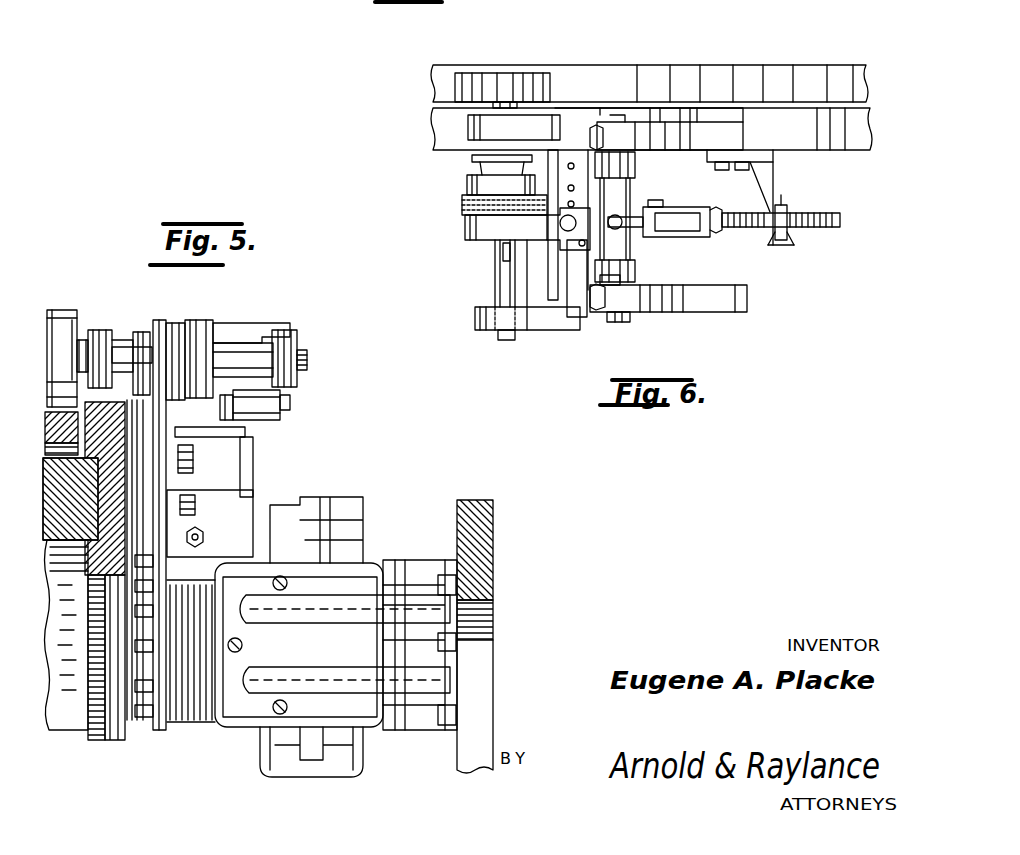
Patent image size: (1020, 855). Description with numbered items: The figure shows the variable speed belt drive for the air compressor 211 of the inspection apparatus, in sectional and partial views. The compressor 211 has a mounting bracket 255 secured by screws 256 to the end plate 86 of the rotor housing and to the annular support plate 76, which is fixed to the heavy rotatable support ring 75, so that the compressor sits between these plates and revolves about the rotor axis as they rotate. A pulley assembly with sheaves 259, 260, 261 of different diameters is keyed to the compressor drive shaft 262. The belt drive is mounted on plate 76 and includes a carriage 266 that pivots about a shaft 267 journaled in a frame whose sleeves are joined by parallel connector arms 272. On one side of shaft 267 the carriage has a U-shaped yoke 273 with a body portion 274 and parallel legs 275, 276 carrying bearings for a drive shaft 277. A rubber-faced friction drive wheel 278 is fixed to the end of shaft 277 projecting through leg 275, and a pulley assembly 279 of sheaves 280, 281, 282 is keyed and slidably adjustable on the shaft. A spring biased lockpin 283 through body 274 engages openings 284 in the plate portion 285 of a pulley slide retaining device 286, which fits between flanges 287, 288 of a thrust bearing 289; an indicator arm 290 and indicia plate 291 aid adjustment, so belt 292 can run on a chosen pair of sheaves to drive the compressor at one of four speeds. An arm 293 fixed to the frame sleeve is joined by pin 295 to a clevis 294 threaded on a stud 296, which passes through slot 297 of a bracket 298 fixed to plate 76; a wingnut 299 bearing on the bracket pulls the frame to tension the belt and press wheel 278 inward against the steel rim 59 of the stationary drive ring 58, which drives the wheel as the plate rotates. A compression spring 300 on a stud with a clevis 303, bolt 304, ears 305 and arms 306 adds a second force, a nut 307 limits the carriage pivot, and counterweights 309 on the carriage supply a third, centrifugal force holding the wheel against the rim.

In FIG. 5, the stationary drive ring 58 is at (52, 430).
In FIG. 5, the cylindrical surface (steel rim) 59 is at (62, 390).
In FIG. 5, the rotatable support ring 75 is at (52, 504).
In FIG. 6, the annular support plate 76 is at (848, 148).
In FIG. 5, the annular support plate 76 is at (87, 560).
In FIG. 5, the end plate 86 is at (489, 512).
In FIG. 5, the air compressor 211 is at (405, 574).
In FIG. 5, the mounting bracket 255 is at (370, 716).
In FIG. 5, the screws 256 is at (431, 543).
In FIG. 5, the sheave 259 is at (158, 712).
In FIG. 5, the sheave 260 is at (174, 694).
In FIG. 5, the sheave 261 is at (192, 708).
In FIG. 5, the drive shaft 262 is at (243, 645).
In FIG. 6, the carriage 266 is at (605, 328).
In FIG. 6, the shaft 267 is at (628, 320).
In FIG. 5, the parallel connector arms 272 is at (125, 470).
In FIG. 6, the U-shaped yoke 273 is at (501, 317).
In FIG. 6, the body portion 274 is at (572, 128).
In FIG. 6, the leg 275 is at (471, 124).
In FIG. 5, the leg 275 is at (90, 330).
In FIG. 6, the leg 276 is at (481, 330).
In FIG. 5, the leg 276 is at (287, 330).
In FIG. 6, the drive shaft 277 is at (490, 292).
In FIG. 5, the drive shaft 277 is at (270, 314).
In FIG. 6, the drive wheel (friction wheel) 278 is at (512, 88).
In FIG. 5, the drive wheel (friction wheel) 278 is at (55, 310).
In FIG. 6, the pulley assembly 279 is at (440, 203).
In FIG. 5, the pulley assembly 279 is at (142, 310).
In FIG. 6, the sheave 280 is at (460, 211).
In FIG. 5, the sheave 281 is at (157, 320).
In FIG. 6, the sheave 282 is at (472, 162).
In FIG. 6, the spring biased lockpin 283 is at (560, 225).
In FIG. 6, the openings 284 is at (634, 173).
In FIG. 6, the plate portion 285 is at (580, 141).
In FIG. 6, the pulley slide retaining device 286 is at (458, 237).
In FIG. 6, the flange 287 is at (478, 261).
In FIG. 6, the flange 288 is at (462, 226).
In FIG. 6, the thrust bearing 289 is at (528, 248).
In FIG. 6, the indicator arm 290 is at (545, 330).
In FIG. 6, the indicia plate 291 is at (576, 317).
In FIG. 5, the belt 292 is at (200, 312).
In FIG. 6, the arm 293 is at (650, 246).
In FIG. 6, the clevis 294 is at (698, 237).
In FIG. 6, the pin 295 is at (664, 206).
In FIG. 6, the stud 296 is at (832, 227).
In FIG. 6, the slot 297 is at (775, 248).
In FIG. 6, the bracket 298 is at (776, 168).
In FIG. 6, the wingnut 299 is at (791, 212).
In FIG. 5, the compression spring 300 is at (217, 538).
In FIG. 5, the clevis 303 is at (222, 445).
In FIG. 5, the bolt 304 is at (250, 432).
In FIG. 5, the ears 305 is at (265, 406).
In FIG. 5, the arms 306 is at (290, 401).
In FIG. 5, the nut 307 is at (205, 461).
In FIG. 6, the counterweights 309 is at (738, 128).